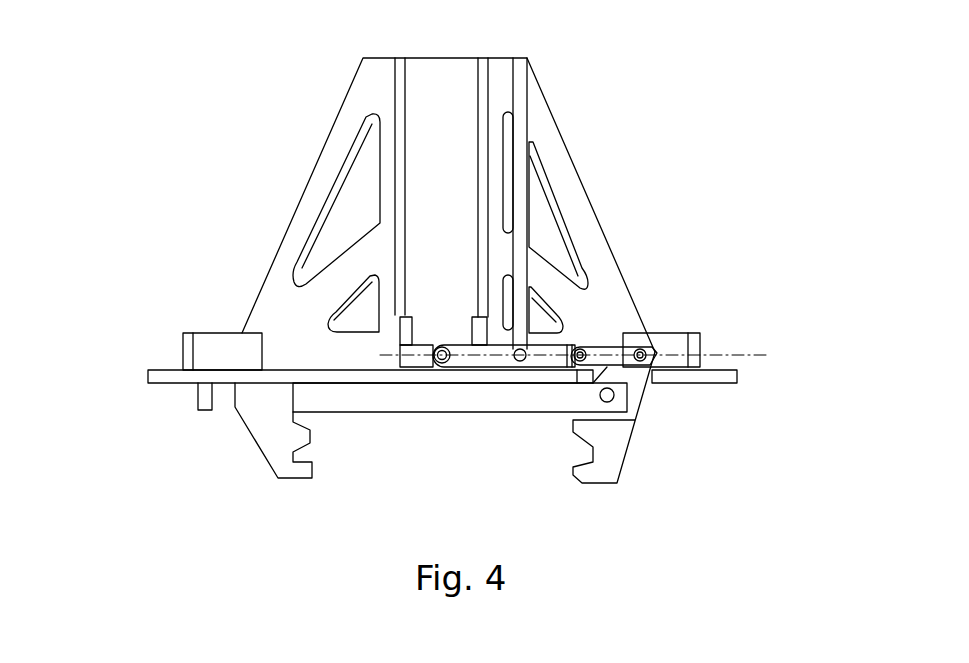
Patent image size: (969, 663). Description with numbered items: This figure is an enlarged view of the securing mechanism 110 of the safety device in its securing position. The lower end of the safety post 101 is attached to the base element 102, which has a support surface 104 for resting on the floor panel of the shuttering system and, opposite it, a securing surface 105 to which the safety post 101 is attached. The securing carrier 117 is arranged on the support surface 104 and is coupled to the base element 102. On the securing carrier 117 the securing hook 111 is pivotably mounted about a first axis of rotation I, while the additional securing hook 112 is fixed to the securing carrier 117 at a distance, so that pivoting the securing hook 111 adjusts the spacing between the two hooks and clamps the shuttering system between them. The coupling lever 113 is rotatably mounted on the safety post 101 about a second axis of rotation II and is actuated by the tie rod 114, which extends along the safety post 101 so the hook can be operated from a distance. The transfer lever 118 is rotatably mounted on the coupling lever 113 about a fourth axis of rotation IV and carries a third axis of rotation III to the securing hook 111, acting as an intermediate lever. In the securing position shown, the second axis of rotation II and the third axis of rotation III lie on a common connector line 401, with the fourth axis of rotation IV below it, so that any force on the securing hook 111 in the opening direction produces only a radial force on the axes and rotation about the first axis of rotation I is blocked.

The safety post 101 is at (323, 108).
The base element 102 is at (148, 376).
The support surface 104 is at (165, 387).
The securing surface 105 is at (162, 368).
The securing mechanism 110 is at (768, 196).
The securing hook 111 is at (612, 440).
The additional securing hook 112 is at (278, 440).
The coupling lever 113 is at (468, 347).
The tie rod 114 is at (528, 67).
The securing carrier 117 is at (453, 398).
The transfer lever 118 is at (607, 346).
The connector line 401 is at (760, 355).
The first axis of rotation I is at (603, 398).
The second axis of rotation II is at (442, 347).
The third axis of rotation III is at (646, 348).
The fourth axis of rotation IV is at (582, 348).